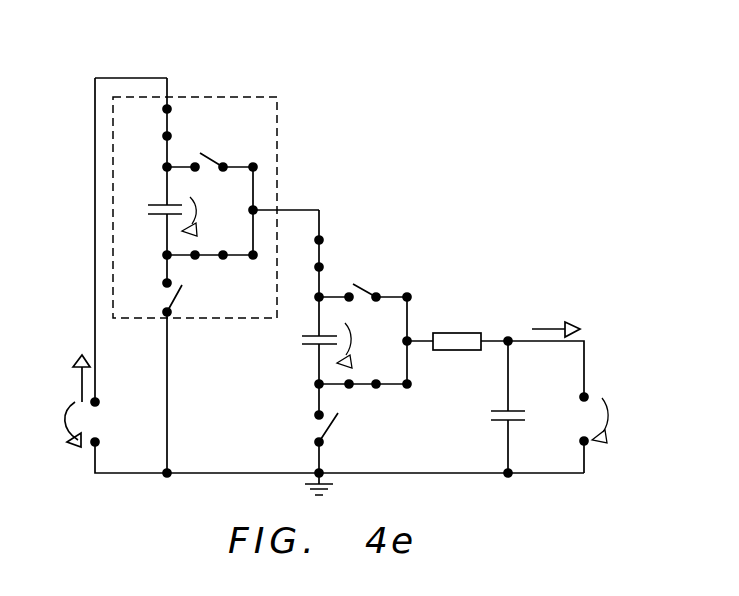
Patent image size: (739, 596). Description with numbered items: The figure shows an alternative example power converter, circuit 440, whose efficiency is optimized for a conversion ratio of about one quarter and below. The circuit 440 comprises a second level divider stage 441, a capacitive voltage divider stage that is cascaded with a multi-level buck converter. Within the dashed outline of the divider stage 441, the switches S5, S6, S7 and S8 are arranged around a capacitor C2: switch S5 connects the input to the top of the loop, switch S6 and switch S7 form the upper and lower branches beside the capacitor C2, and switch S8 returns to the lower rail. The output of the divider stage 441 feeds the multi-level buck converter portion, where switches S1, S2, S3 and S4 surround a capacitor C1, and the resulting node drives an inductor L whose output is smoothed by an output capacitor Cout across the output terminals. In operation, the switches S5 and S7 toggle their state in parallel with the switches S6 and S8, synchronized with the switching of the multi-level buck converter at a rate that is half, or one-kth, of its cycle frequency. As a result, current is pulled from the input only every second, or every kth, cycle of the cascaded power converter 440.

The circuit 440 is at (197, 53).
The second level divider stage 441 is at (277, 128).
The switch S1 is at (307, 253).
The switch S2 is at (363, 283).
The switch S3 is at (363, 397).
The switch S4 is at (315, 415).
The switch S5 is at (154, 122).
The switch S6 is at (210, 152).
The switch S7 is at (210, 265).
The switch S8 is at (160, 285).
The capacitor C1 is at (306, 340).
The capacitor C2 is at (159, 211).
The inductor L is at (457, 331).
The output capacitor Cout is at (527, 407).